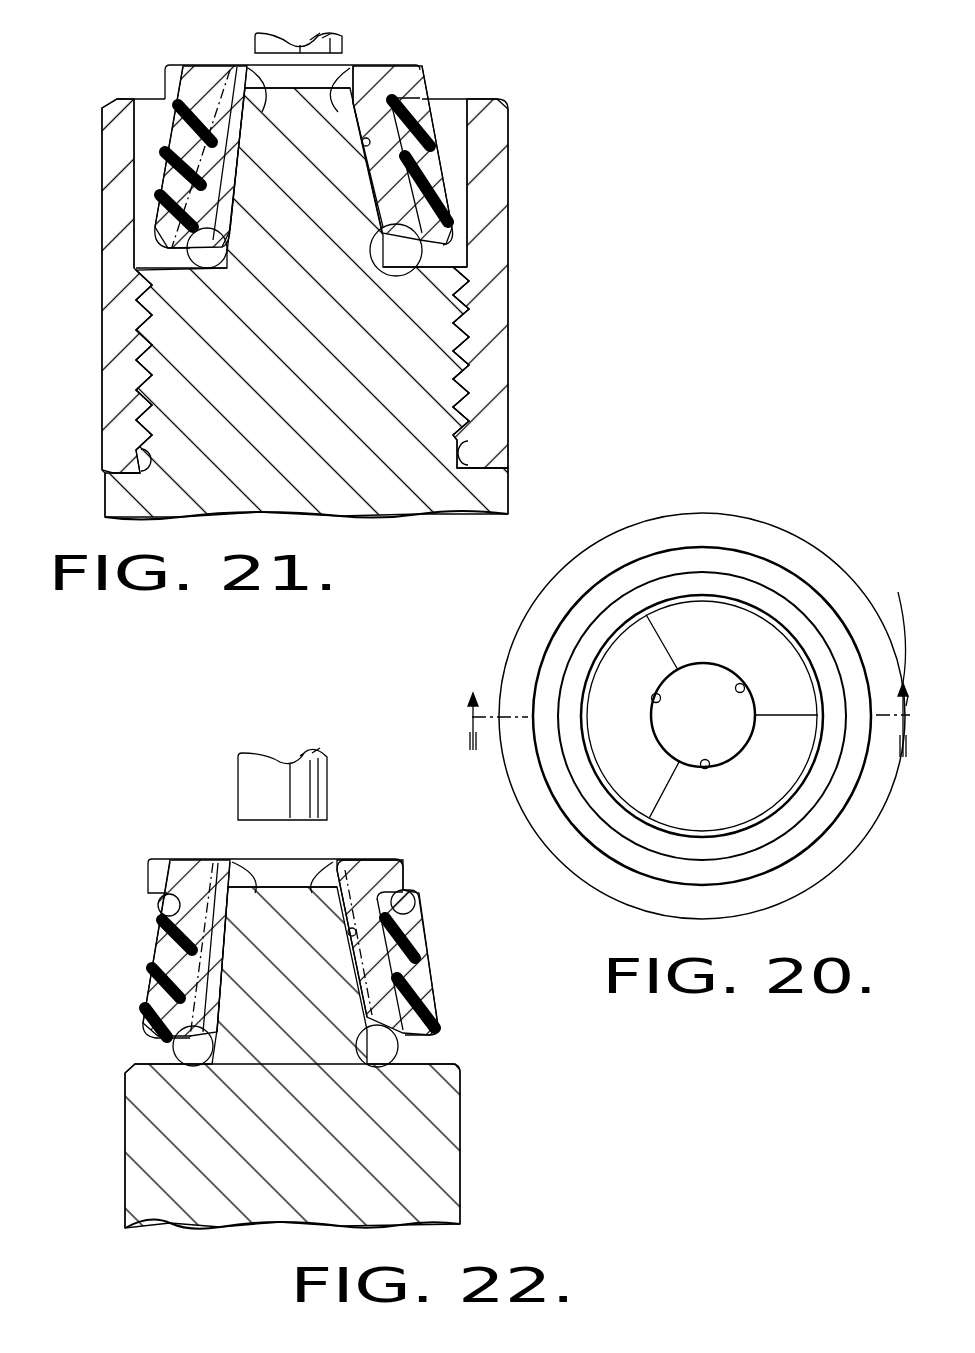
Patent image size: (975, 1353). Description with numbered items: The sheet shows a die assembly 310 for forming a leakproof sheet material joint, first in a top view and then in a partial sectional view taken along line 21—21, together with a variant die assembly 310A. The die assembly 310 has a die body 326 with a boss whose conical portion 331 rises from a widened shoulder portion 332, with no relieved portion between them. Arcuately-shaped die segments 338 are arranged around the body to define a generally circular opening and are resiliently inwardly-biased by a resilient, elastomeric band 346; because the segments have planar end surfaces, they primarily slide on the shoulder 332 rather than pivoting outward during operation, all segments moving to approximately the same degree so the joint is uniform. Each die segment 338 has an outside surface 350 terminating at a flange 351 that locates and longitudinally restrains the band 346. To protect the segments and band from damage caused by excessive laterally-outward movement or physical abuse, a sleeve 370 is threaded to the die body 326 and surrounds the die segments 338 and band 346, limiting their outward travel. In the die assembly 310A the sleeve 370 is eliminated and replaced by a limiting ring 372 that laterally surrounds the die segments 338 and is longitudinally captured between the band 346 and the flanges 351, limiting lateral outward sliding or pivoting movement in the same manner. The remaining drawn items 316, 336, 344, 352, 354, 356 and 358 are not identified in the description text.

In FIG. 21, the die assembly 310 is at (563, 392).
In FIG. 20, the die assembly 310 is at (625, 922).
In FIG. 22, the die assembly 310A is at (476, 1134).
In FIG. 21, the plug member 316 is at (343, 38).
In FIG. 22, the plug member 316 is at (242, 768).
In FIG. 21, the die body 326 is at (490, 496).
In FIG. 22, the die body 326 is at (403, 1177).
In FIG. 21, the conical portion 331 is at (395, 150).
In FIG. 22, the conical portion 331 is at (265, 952).
In FIG. 21, the shoulder portion 332 is at (150, 265).
In FIG. 22, the shoulder portion 332 is at (153, 1063).
In FIG. 20, the central bore 336 is at (677, 723).
In FIG. 21, the die segments 338 is at (302, 143).
In FIG. 20, the die segments 338 is at (697, 625).
In FIG. 22, the die segments 338 is at (292, 927).
In FIG. 21, the lobe 344 is at (226, 257).
In FIG. 22, the lobe 344 is at (285, 1046).
In FIG. 21, the resilient elastomeric band 346 is at (455, 230).
In FIG. 20, the resilient elastomeric band 346 is at (808, 834).
In FIG. 22, the resilient elastomeric band 346 is at (425, 992).
In FIG. 21, the outside surfaces 350 is at (440, 130).
In FIG. 22, the outside surfaces 350 is at (170, 960).
In FIG. 21, the flanges 351 is at (197, 83).
In FIG. 22, the flanges 351 is at (167, 877).
In FIG. 21, the groove 352 is at (210, 66).
In FIG. 20, the groove 352 is at (757, 628).
In FIG. 22, the groove 352 is at (212, 862).
In FIG. 20, the rib 354 is at (642, 628).
In FIG. 21, the recess 356 is at (352, 100).
In FIG. 20, the recess 356 is at (742, 685).
In FIG. 22, the recess 356 is at (237, 893).
In FIG. 21, the sealing lip 358 is at (255, 74).
In FIG. 22, the sealing lip 358 is at (240, 865).
In FIG. 21, the sleeve 370 is at (490, 296).
In FIG. 20, the sleeve 370 is at (777, 540).
In FIG. 22, the limiting ring 372 is at (158, 905).
In FIG. 20, the section line 21— 21 is at (681, 658).